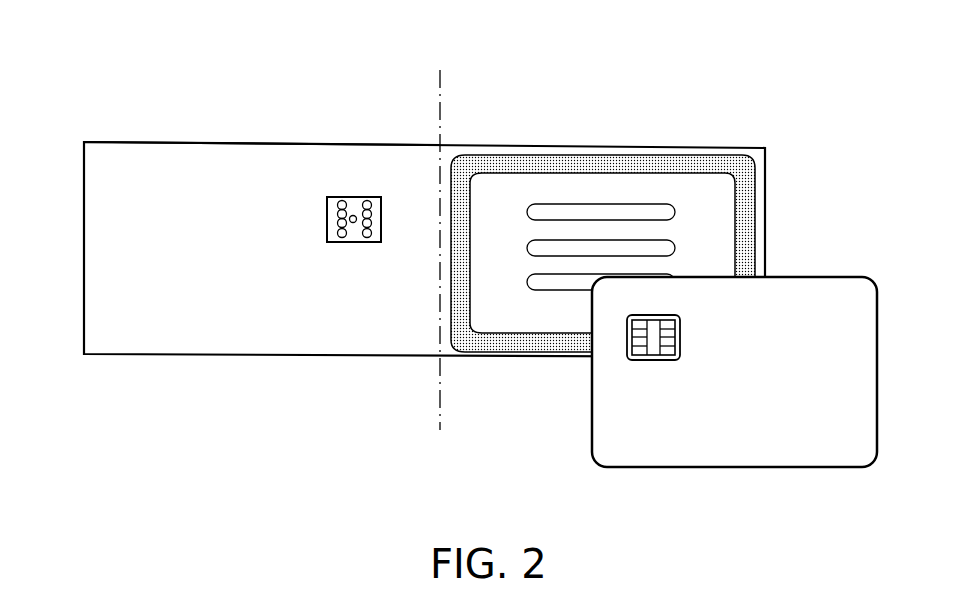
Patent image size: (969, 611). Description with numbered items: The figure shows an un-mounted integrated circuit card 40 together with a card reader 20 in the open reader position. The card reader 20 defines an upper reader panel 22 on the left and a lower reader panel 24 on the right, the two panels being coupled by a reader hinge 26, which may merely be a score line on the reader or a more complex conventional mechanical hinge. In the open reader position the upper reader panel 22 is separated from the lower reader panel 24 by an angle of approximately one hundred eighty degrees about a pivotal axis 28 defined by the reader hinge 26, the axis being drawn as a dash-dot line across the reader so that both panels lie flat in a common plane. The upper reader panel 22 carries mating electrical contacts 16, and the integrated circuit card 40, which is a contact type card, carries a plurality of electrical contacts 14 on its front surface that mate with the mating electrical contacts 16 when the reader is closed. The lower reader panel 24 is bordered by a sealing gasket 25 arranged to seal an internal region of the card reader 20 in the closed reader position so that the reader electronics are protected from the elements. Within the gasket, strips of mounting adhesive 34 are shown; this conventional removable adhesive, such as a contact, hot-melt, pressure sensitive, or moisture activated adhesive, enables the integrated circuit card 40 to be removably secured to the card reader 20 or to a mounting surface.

The electrical contacts 14 is at (710, 366).
The mating electrical contacts 16 is at (306, 236).
The card reader 20 is at (84, 140).
The upper reader panel 22 is at (265, 150).
The lower reader panel 24 is at (605, 152).
The sealing gasket 25 is at (750, 263).
The reader hinge 26 is at (425, 282).
The pivotal axis 28 is at (445, 82).
The mounting adhesive 34 is at (668, 248).
The integrated circuit card 40 is at (668, 467).